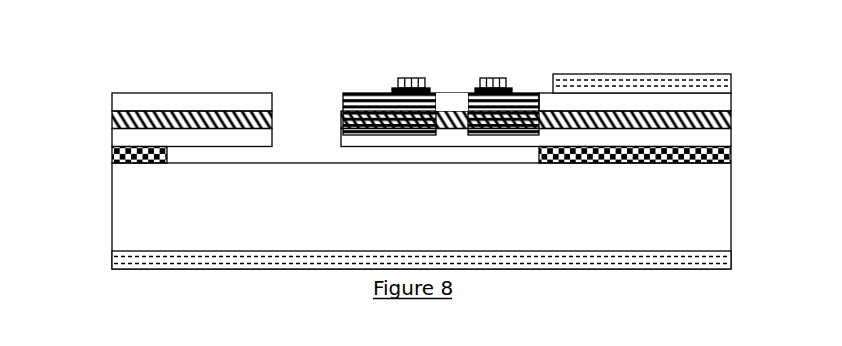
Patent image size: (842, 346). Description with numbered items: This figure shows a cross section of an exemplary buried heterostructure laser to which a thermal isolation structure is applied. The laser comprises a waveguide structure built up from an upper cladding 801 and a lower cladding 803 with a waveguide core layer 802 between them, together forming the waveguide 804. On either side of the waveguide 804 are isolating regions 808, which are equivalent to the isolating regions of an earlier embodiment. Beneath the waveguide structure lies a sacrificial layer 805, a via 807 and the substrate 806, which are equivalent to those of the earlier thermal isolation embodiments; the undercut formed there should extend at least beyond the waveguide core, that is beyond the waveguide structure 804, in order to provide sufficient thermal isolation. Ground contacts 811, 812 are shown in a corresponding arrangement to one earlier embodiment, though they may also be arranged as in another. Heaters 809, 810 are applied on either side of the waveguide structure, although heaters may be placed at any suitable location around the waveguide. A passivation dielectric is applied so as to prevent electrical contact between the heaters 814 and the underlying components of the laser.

The upper cladding 801 is at (112, 103).
The waveguide core layer 802 is at (112, 120).
The lower cladding 803 is at (112, 136).
The waveguide 804 is at (453, 92).
The sacrificial layer 805 is at (112, 153).
The substrate 806 is at (112, 178).
The via 807 is at (327, 137).
The isolating regions 808 is at (388, 91).
The heater 809 is at (412, 78).
The heater 810 is at (490, 79).
The ground contact 811 is at (733, 84).
The ground contact 812 is at (732, 258).
The heaters 814 is at (475, 87).